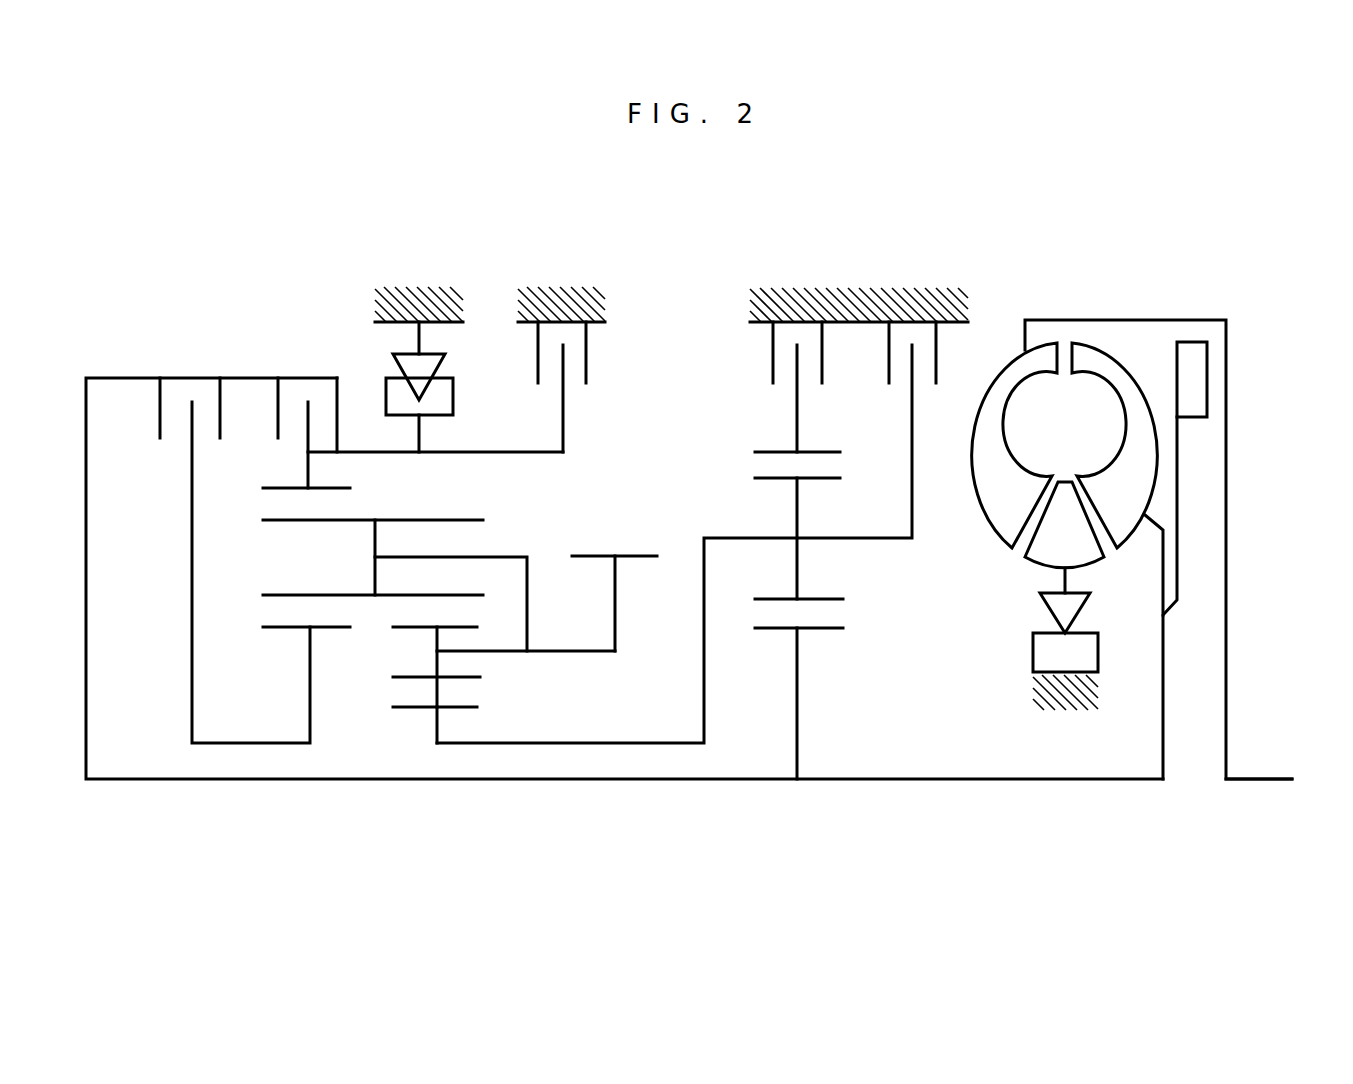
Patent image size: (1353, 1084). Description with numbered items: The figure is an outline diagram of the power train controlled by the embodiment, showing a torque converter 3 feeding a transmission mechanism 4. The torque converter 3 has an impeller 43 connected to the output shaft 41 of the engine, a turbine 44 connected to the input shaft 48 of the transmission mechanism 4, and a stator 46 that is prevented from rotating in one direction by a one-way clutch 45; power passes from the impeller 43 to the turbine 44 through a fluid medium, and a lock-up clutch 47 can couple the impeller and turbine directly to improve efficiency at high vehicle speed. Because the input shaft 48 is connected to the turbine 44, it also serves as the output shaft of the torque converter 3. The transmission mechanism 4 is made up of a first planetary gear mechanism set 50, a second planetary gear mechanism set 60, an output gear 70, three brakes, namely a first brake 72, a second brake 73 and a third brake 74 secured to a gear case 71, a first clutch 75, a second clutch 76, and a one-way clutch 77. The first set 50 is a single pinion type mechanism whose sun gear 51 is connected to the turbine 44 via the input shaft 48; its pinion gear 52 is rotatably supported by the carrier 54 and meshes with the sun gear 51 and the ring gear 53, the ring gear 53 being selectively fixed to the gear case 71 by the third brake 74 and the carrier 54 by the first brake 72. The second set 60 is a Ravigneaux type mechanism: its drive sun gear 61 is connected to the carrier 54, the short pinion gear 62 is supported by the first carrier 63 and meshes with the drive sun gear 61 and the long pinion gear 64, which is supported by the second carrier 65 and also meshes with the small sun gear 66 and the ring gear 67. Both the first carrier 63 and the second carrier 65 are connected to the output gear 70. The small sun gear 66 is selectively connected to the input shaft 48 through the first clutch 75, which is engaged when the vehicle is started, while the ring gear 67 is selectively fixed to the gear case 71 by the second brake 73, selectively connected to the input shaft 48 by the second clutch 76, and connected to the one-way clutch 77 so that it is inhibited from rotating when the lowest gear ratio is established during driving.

The torque converter 3 is at (1085, 300).
The transmission mechanism 4 is at (968, 220).
The output shaft of the engine 41 is at (1250, 781).
The impeller 43 is at (1000, 540).
The turbine 44 is at (1157, 470).
The one-way clutch 45 is at (1045, 612).
The stator 46 is at (1095, 562).
The lock-up clutch 47 is at (1207, 365).
The input shaft 48 is at (952, 770).
The first planetary gear mechanism set 50 is at (795, 788).
The sun gear S(UD) 51 is at (812, 675).
The pinion gear 52 is at (823, 592).
The ring gear R(UD) 53 is at (803, 442).
The carrier C(UD) 54 is at (912, 505).
The second planetary gear mechanism set 60 is at (437, 790).
The sun gear S(D) 61 is at (485, 705).
The short pinion gear 62 is at (400, 630).
The carrier C(1) 63 is at (505, 652).
The long pinion gear 64 is at (483, 520).
The carrier C(2) 65 is at (463, 557).
The sun gear S(S) 66 is at (283, 630).
The ring gear R(1)(R(2)) 67 is at (325, 483).
The output gear 70 is at (657, 548).
The gear case 71 is at (445, 292).
The B1 brake 72 is at (928, 385).
The B2 brake 73 is at (578, 392).
The B3 brake 74 is at (773, 375).
The C1 clutch 75 is at (160, 420).
The C2 clutch 76 is at (277, 422).
The one-way clutch F 77 is at (390, 367).